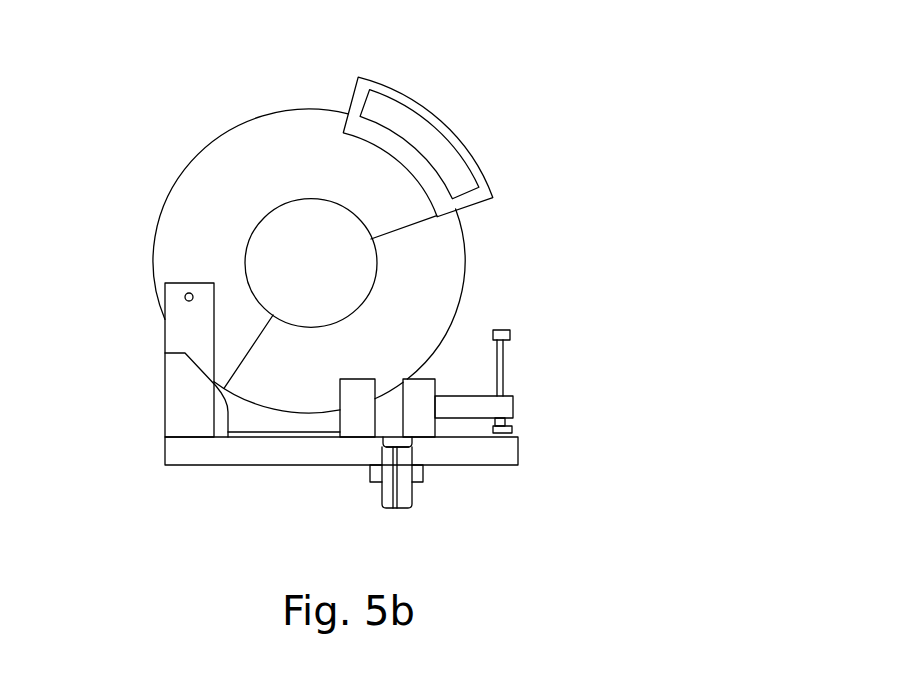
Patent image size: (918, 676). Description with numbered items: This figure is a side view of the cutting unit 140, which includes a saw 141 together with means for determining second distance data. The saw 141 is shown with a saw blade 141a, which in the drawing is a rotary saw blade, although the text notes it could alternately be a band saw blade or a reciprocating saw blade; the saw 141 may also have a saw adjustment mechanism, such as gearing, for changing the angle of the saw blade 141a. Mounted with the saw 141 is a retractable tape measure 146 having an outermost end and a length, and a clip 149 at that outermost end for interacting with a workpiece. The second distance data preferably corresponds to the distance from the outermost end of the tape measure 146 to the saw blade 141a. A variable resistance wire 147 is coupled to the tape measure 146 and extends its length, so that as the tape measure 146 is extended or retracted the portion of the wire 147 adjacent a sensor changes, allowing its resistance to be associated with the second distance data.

The cutting unit 140 is at (574, 140).
The saw 141 is at (149, 230).
The saw blade 141a is at (465, 278).
The retractable tape measure 146 is at (403, 482).
The variable resistance wire 147 is at (398, 438).
The clip 149 is at (405, 443).